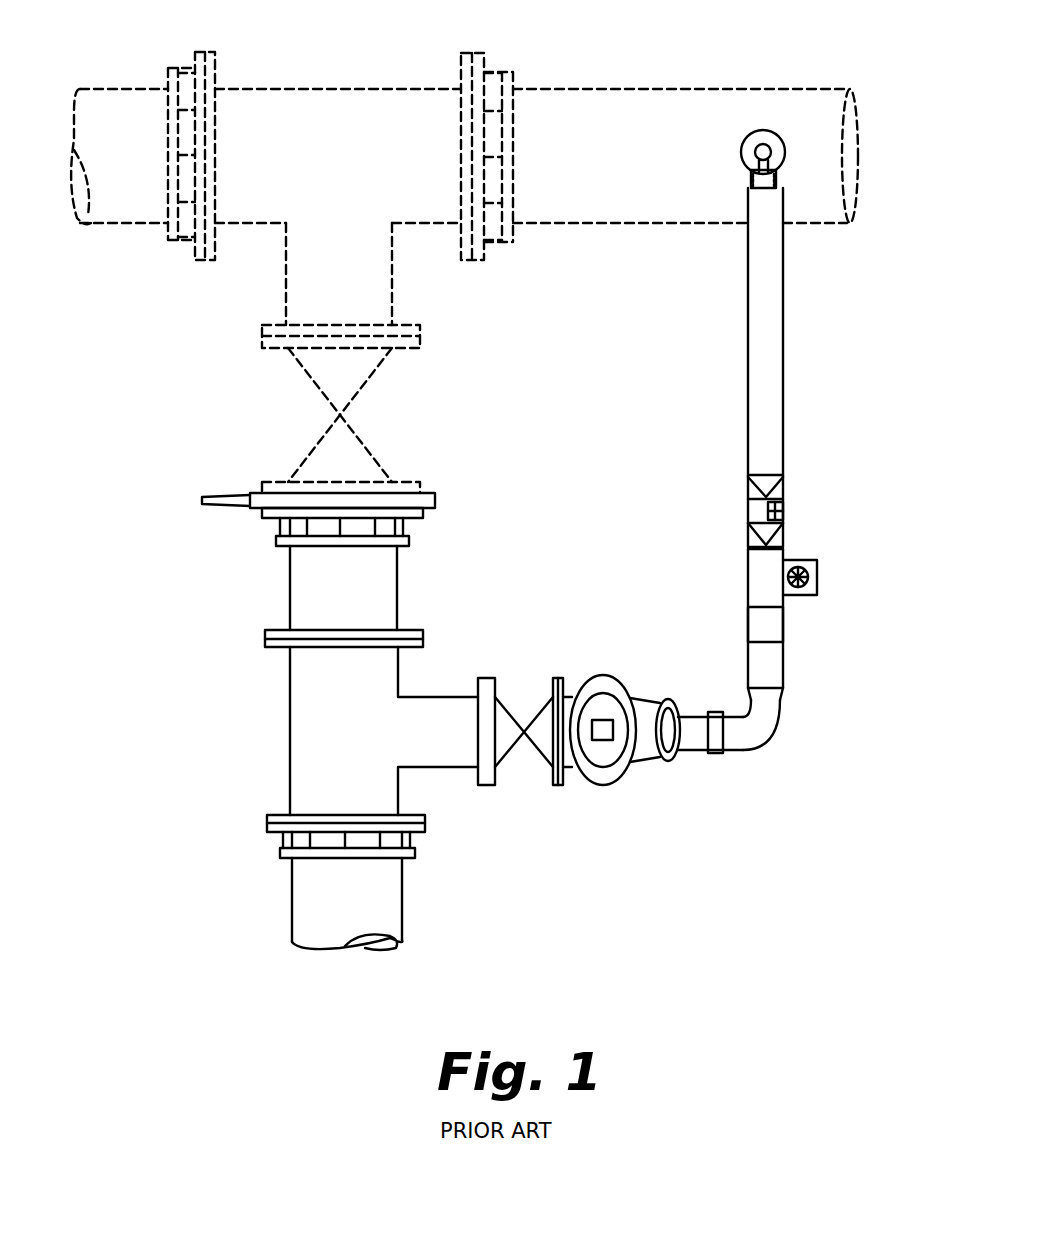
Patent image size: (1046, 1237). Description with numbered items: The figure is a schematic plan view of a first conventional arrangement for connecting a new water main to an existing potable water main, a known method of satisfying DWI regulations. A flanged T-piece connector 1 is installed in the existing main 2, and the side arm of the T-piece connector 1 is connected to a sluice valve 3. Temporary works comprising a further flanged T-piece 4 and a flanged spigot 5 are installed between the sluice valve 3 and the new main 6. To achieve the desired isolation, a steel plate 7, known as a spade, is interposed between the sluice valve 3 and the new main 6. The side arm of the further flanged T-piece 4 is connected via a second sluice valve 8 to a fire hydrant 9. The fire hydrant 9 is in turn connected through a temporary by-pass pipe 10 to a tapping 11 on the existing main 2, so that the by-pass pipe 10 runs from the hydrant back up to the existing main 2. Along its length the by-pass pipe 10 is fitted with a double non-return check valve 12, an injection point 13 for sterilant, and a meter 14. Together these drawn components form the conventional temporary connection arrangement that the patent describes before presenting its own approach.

The flanged T-piece connector 1 is at (303, 117).
The existing main 2 is at (772, 108).
The sluice valve 3 is at (390, 412).
The further flanged T-piece 4 is at (313, 700).
The flanged spigot 5 is at (375, 590).
The new main 6 is at (310, 908).
The steel plate 7 is at (427, 502).
The sluice valve 8 is at (523, 770).
The fire hydrant 9 is at (622, 683).
The temporary by-pass pipe 10 is at (783, 340).
The tapping 11 is at (747, 155).
The double non-return check valve 12 is at (783, 510).
The injection point 13 is at (817, 577).
The meter 14 is at (783, 628).